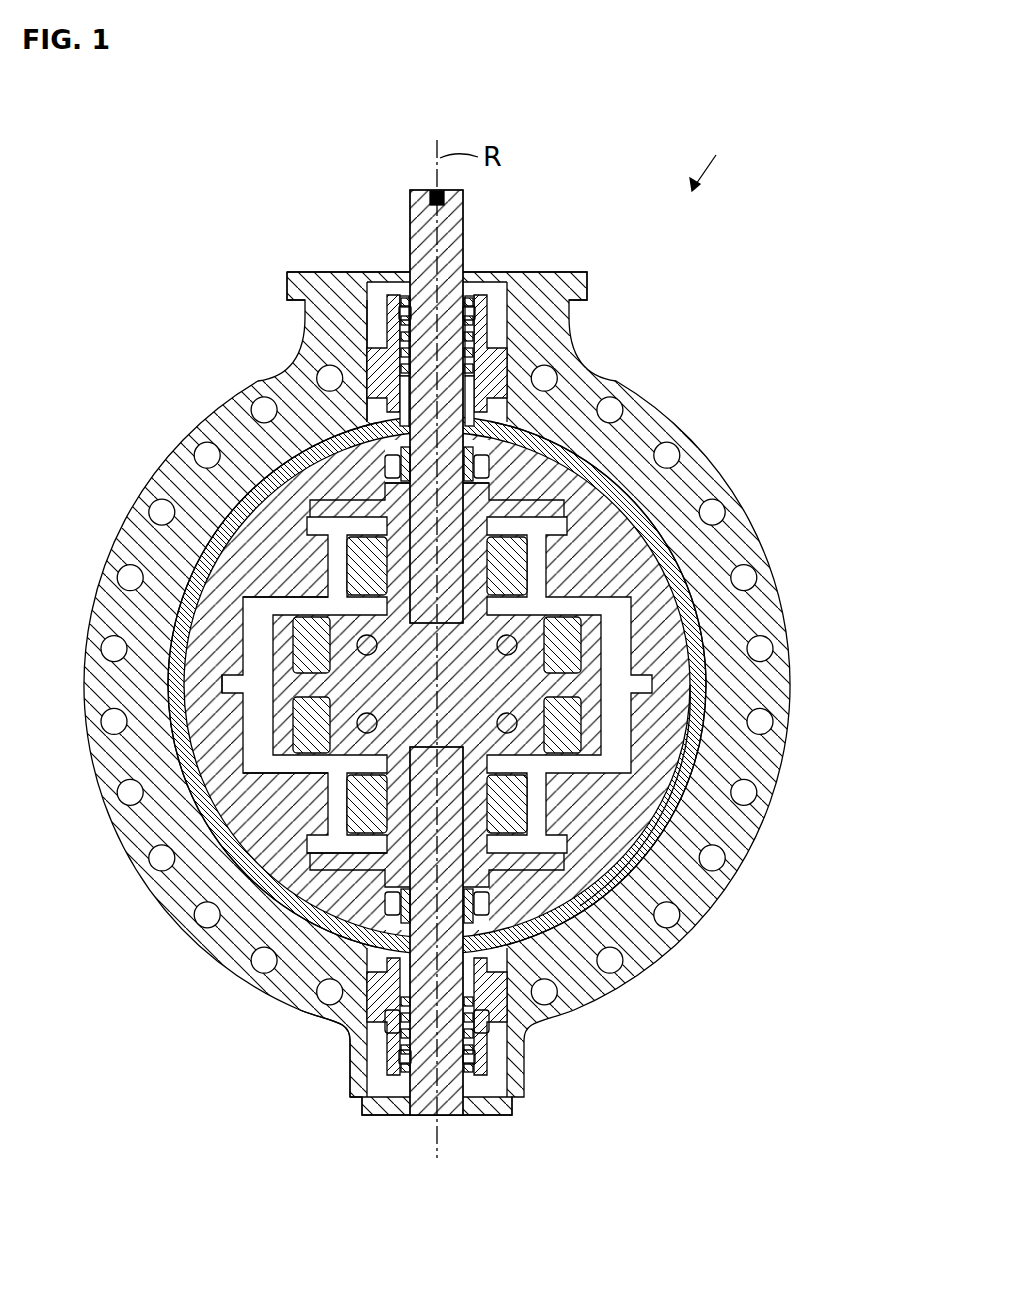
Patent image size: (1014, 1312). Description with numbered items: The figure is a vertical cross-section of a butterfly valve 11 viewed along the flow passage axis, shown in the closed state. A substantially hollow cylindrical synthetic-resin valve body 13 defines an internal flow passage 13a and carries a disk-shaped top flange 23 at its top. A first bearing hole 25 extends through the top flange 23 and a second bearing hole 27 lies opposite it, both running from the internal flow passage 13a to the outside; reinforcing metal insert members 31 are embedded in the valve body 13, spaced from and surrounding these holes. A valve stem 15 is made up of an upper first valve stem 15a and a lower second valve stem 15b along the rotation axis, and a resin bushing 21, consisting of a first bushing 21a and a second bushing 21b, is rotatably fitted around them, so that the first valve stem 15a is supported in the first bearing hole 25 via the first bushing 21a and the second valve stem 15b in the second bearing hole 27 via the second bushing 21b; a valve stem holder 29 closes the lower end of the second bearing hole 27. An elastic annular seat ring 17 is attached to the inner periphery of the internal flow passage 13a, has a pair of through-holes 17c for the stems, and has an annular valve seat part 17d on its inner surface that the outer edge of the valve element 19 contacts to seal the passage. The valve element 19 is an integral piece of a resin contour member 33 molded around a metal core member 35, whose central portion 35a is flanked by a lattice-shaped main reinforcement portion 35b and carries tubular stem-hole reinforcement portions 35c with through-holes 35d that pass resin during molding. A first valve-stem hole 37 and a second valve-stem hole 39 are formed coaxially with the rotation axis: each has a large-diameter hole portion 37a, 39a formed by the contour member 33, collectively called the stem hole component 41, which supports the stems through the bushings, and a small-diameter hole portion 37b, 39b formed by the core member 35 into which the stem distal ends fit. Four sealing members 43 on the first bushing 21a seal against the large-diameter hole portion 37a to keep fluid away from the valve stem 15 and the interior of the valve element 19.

The butterfly valve 11 is at (720, 159).
The valve body 13 is at (765, 692).
The internal flow passage 13a is at (400, 930).
The valve stem 15 is at (541, 650).
The first valve stem 15a is at (436, 406).
The second valve stem 15b is at (436, 931).
The seat ring 17 is at (655, 512).
The through-hole 17c is at (400, 418).
The valve seat part 17d is at (672, 742).
The valve element 19 is at (665, 565).
The bushing 21 is at (325, 664).
The first bushing 21a is at (405, 345).
The second bushing 21b is at (402, 993).
The top flange 23 is at (585, 290).
The first bearing hole 25 is at (490, 383).
The second bearing hole 27 is at (518, 1050).
The valve stem holder 29 is at (497, 1108).
The insert member 31 is at (375, 370).
The contour member 33 is at (612, 820).
The core member 35 is at (444, 651).
The central portion 35a is at (345, 703).
The main reinforcement portion 35b is at (272, 598).
The stem-hole reinforcement portion 35c is at (395, 470).
The through-hole 35d is at (398, 485).
The first valve-stem hole 37 is at (593, 375).
The first large-diameter hole portion 37a is at (478, 372).
The first small-diameter hole portion 37b is at (478, 455).
The second valve-stem hole 39 is at (294, 984).
The second large-diameter hole portion 39a is at (392, 1012).
The second small-diameter hole portion 39b is at (395, 983).
The stem hole component 41 is at (400, 475).
The sealing member 43 is at (476, 318).